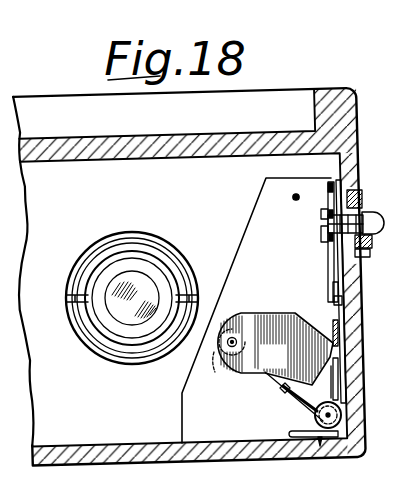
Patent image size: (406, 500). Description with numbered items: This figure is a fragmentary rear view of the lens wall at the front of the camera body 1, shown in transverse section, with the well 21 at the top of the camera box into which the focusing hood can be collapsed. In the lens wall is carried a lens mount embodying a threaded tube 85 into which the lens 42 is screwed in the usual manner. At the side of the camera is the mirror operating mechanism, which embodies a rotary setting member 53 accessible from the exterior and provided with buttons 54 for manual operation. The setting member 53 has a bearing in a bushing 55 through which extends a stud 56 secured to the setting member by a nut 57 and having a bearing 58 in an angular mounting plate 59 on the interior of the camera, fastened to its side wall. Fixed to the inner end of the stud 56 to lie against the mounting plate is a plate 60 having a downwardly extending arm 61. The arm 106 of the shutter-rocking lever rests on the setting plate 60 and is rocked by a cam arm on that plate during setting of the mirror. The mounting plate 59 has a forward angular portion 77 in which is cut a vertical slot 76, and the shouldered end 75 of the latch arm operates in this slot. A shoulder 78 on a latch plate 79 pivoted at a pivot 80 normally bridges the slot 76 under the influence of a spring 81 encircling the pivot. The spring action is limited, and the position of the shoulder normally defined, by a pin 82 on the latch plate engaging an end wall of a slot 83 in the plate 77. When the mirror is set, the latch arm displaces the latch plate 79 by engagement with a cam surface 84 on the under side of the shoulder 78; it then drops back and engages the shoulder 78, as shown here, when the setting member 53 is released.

The housing 1 is at (348, 92).
The well 21 is at (246, 124).
The threaded tube 85 is at (137, 257).
The lens 42 is at (143, 288).
The forward angular portion 77 is at (241, 242).
The arm 106 is at (327, 182).
The shouldered end 75 is at (345, 308).
The bushing 55 is at (356, 192).
The stud 56 is at (328, 254).
The buttons 54 is at (376, 220).
The rotary setting member 53 is at (372, 232).
The nut 57 is at (366, 255).
The plate 60 is at (325, 214).
The bearing 58 is at (327, 239).
The downwardly extending arm 61 is at (333, 292).
The angular mounting plate 59 is at (334, 310).
The shoulder 78 is at (337, 327).
The cam surface 84 is at (337, 360).
The vertical slot 76 is at (337, 375).
The latch plate 79 is at (275, 349).
The pin 82 is at (236, 338).
The slot 83 is at (222, 358).
The spring 81 is at (286, 396).
The pivot 80 is at (325, 415).